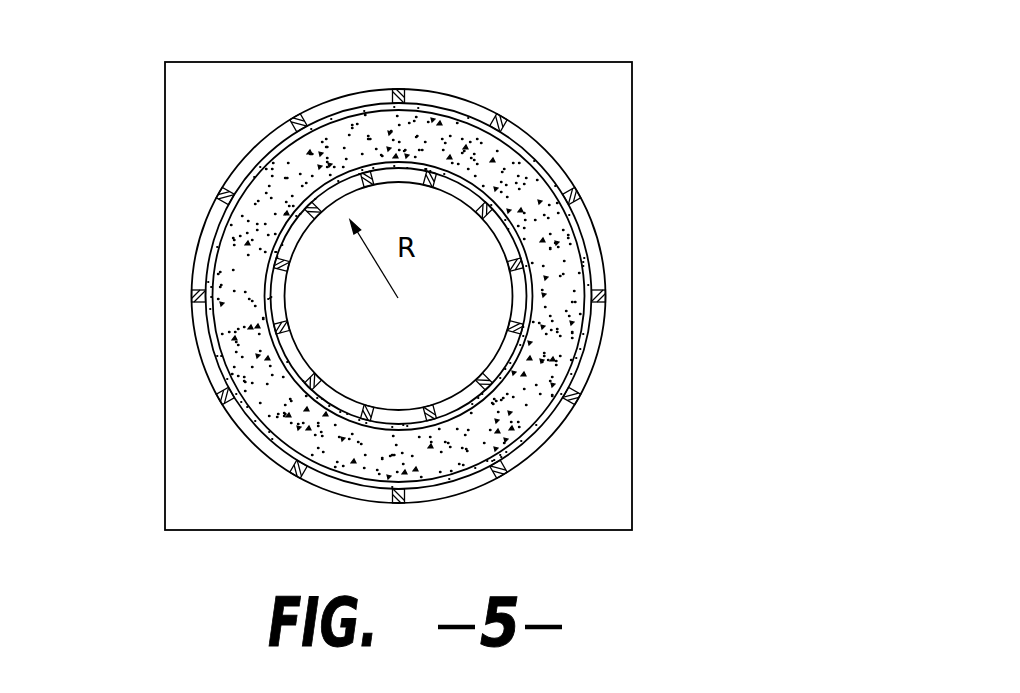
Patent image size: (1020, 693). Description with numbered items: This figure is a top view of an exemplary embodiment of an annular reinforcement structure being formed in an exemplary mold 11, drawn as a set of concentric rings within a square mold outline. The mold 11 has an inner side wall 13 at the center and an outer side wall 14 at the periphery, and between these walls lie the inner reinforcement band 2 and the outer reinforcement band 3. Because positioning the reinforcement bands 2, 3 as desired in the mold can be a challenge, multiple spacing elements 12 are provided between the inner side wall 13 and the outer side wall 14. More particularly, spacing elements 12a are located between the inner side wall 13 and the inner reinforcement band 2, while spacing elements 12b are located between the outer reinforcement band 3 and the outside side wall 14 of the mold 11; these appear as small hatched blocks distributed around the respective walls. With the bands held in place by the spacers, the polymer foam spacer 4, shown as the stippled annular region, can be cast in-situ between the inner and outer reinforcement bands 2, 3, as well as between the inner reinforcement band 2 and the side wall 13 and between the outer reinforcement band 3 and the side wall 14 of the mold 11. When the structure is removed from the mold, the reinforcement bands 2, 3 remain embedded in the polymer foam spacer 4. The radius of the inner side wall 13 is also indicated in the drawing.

The inner reinforcement band 2 is at (427, 163).
The outer reinforcement band 3 is at (342, 115).
The polymer foam spacer 4 is at (518, 183).
The mold 11 is at (712, 85).
The spacing elements 12 is at (510, 328).
The spacing elements 12a is at (310, 381).
The spacing elements 12b is at (195, 299).
The inner side wall 13 is at (290, 230).
The outer side wall 14 is at (196, 369).